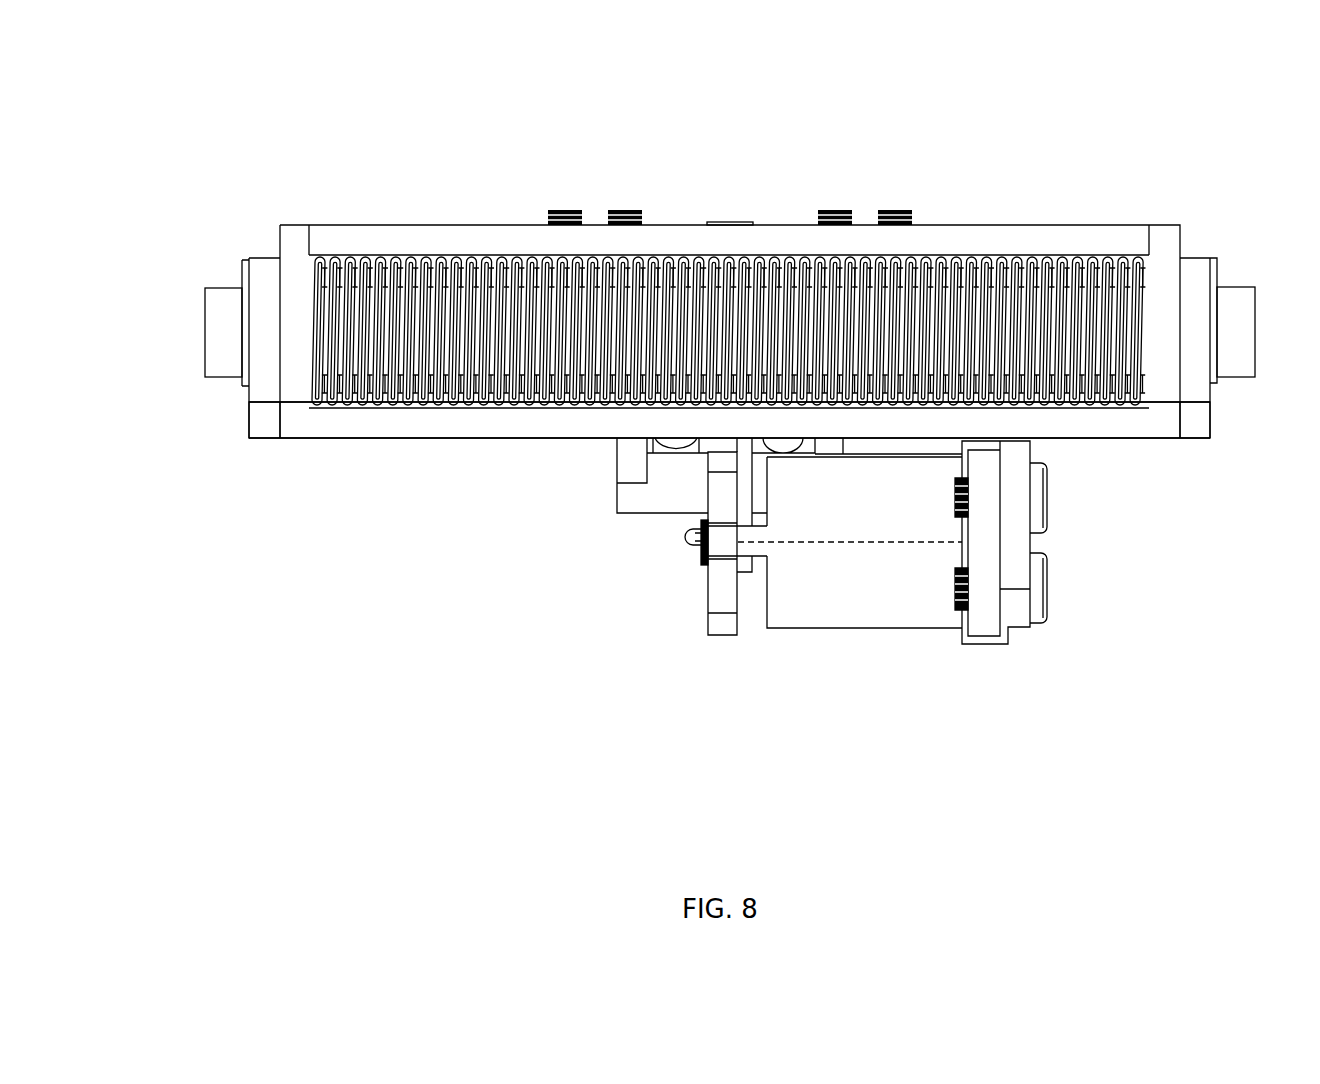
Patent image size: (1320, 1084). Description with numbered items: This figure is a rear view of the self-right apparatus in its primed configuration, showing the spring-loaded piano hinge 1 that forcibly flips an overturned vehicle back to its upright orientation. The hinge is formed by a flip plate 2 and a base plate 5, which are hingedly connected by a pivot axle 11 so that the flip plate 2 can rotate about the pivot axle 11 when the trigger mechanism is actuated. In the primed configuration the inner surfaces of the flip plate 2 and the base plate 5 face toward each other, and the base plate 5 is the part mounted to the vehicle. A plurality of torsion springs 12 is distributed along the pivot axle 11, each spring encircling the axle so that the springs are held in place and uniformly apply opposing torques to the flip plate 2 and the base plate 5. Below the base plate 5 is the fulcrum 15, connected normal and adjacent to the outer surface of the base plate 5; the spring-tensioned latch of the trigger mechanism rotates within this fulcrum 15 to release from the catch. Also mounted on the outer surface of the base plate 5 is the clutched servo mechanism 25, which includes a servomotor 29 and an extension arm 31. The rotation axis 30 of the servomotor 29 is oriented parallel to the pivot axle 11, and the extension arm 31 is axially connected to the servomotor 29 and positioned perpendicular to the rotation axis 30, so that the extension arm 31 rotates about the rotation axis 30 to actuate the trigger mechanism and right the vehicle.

The spring-loaded piano hinge 1 is at (236, 126).
The flip plate 2 is at (993, 232).
The base plate 5 is at (335, 433).
The pivot axle 11 is at (215, 292).
The plurality of torsion springs 12 is at (367, 257).
The fulcrum 15 is at (625, 508).
The clutched servo mechanism 25 is at (931, 716).
The servomotor 29 is at (857, 642).
The rotation axis 30 is at (839, 541).
The extension arm 31 is at (719, 632).